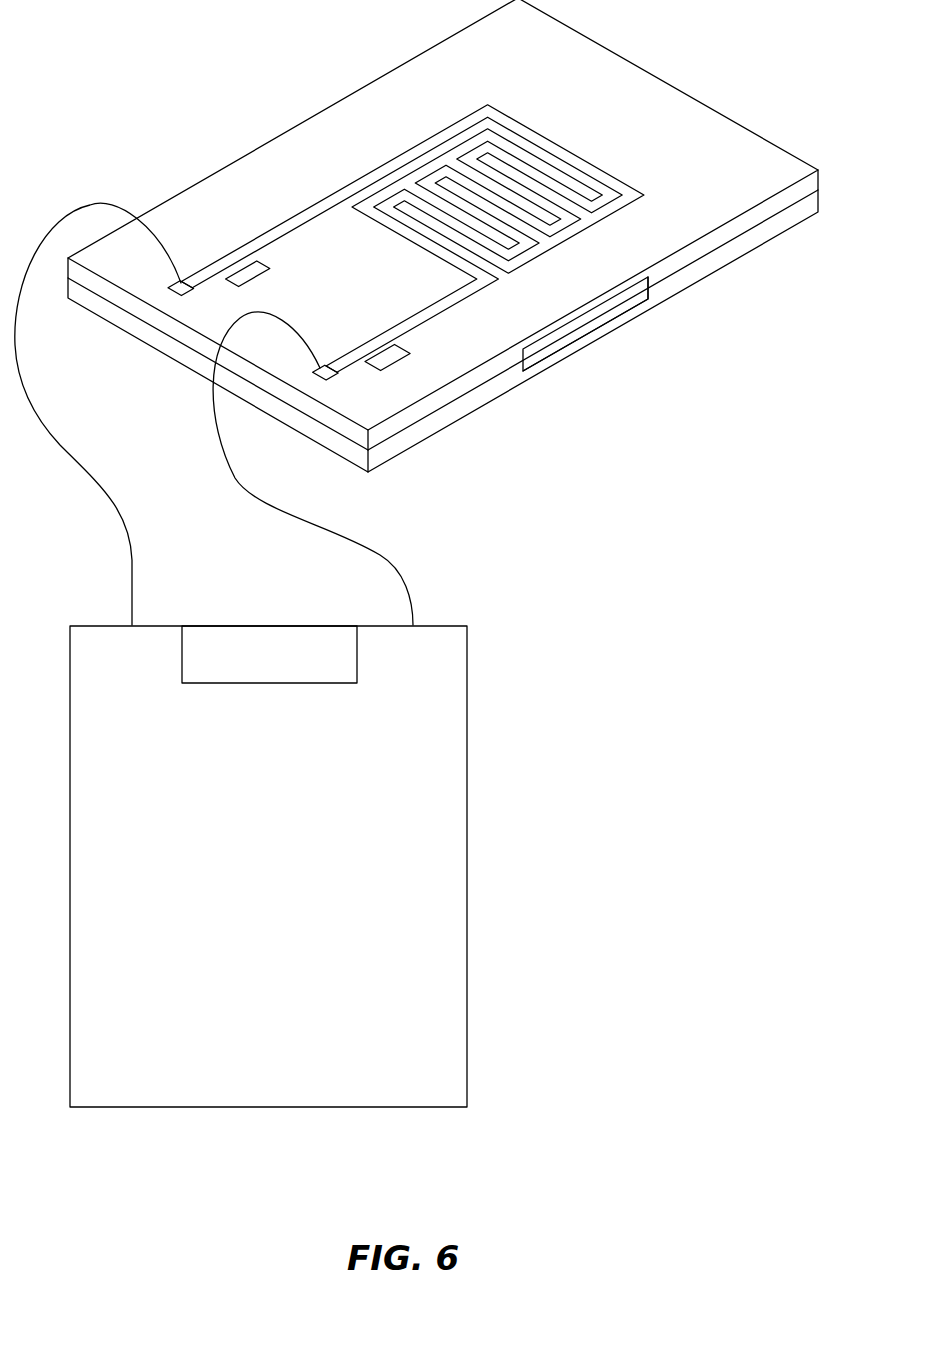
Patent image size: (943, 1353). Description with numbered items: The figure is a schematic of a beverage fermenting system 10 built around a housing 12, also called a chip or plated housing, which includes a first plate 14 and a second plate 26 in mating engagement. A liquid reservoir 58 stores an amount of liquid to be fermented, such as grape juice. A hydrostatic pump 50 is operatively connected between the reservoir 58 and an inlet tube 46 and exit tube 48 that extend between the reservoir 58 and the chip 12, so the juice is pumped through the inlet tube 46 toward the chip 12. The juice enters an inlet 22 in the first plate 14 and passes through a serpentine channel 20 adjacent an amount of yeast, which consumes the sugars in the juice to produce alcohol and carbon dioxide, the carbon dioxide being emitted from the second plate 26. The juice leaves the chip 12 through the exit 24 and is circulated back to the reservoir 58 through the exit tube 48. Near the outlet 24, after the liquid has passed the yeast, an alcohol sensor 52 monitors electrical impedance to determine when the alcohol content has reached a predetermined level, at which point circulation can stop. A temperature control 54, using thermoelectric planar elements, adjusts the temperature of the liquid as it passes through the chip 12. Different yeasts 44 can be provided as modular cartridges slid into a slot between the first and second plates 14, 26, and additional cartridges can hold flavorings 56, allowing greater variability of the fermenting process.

The beverage fermenting system 10 is at (118, 53).
The housing 12 is at (327, 87).
The first plate 14 is at (257, 147).
The channel 20 is at (513, 128).
The inlet 22 is at (178, 285).
The exit 24 is at (322, 370).
The second plate 26 is at (757, 246).
The yeasts 44 is at (588, 313).
The inlet tube 46 is at (132, 578).
The exit tube 48 is at (412, 590).
The hydrostatic pump 50 is at (258, 640).
The alcohol sensor 52 is at (400, 352).
The temperature control 54 is at (258, 268).
The flavorings 56 is at (610, 318).
The liquid reservoir 58 is at (468, 773).